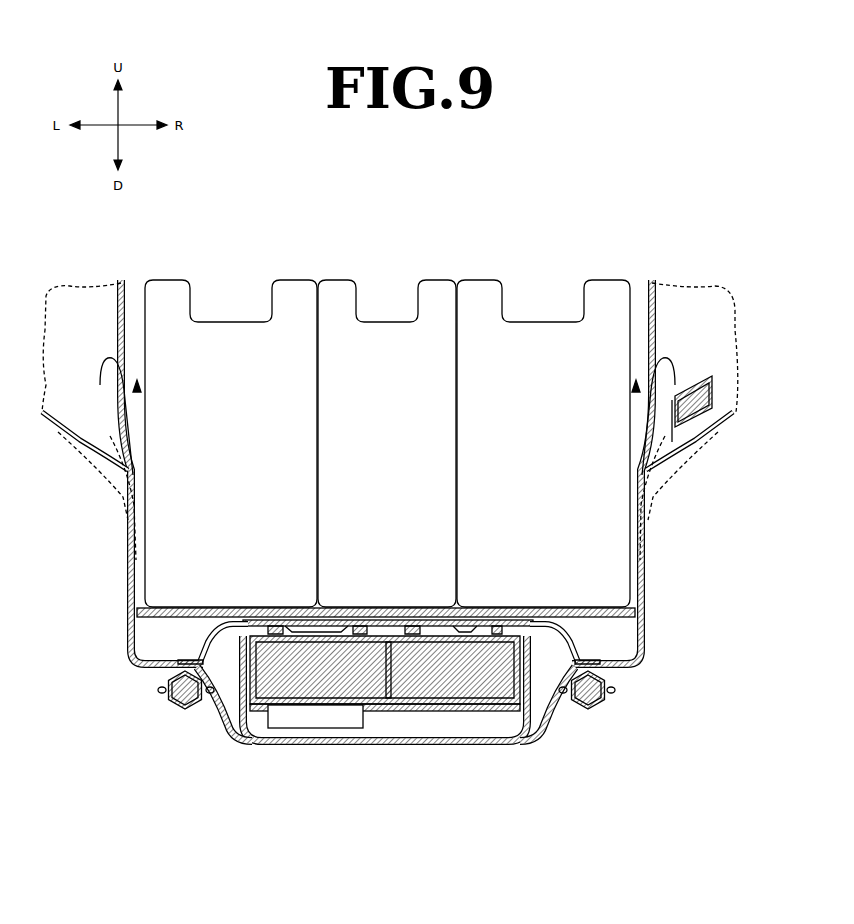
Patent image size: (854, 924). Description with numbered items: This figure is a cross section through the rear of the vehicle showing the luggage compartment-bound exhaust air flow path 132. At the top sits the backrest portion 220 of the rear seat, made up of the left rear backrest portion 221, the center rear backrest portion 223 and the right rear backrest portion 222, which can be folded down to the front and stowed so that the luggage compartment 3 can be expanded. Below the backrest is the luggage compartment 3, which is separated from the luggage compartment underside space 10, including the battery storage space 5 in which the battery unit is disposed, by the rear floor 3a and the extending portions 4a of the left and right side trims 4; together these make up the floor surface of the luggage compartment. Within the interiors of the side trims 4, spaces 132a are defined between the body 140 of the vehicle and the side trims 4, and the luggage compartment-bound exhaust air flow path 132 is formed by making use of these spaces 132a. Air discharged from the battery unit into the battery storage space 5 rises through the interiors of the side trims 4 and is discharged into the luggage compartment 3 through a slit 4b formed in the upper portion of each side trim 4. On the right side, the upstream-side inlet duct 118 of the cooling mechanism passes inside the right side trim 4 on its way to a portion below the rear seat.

The luggage compartment 3 is at (387, 405).
The rear floor 3a is at (405, 606).
The side trim 4 is at (120, 312).
The extending portion 4a is at (188, 606).
The slit 4b is at (120, 352).
The battery storage space 5 is at (386, 704).
The luggage compartment underside space 10 is at (545, 675).
The upstream-side inlet duct 118 is at (684, 380).
The luggage compartment-bound exhaust air flow path 132 is at (120, 428).
The space 132a is at (127, 463).
The body 140 is at (80, 438).
The backrest portion 220 is at (387, 405).
The left rear backrest portion 221 is at (190, 365).
The right rear backrest portion 222 is at (543, 405).
The center rear backrest portion 223 is at (362, 370).